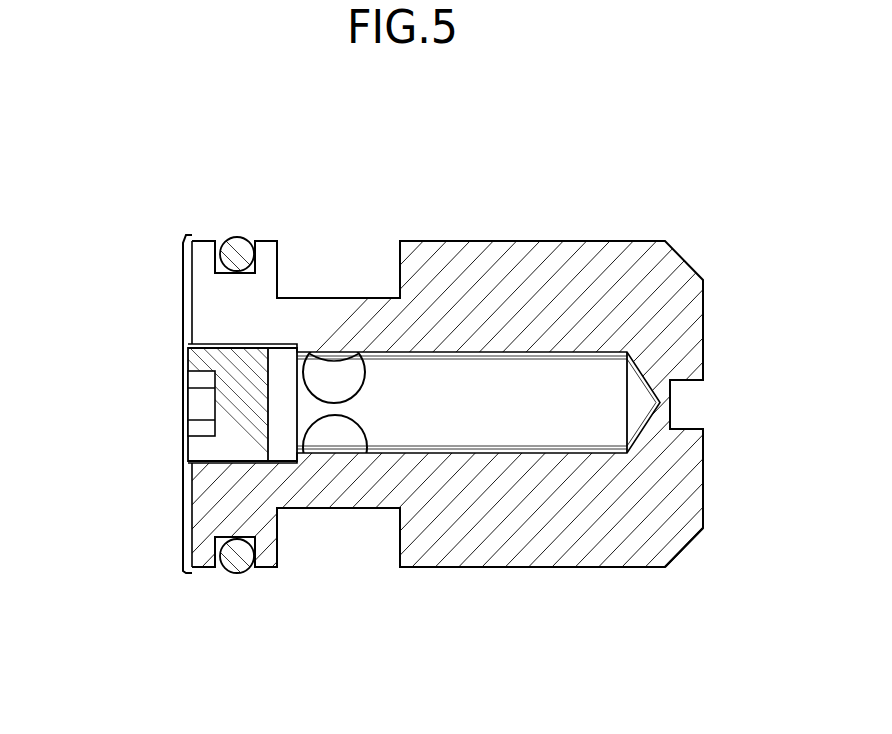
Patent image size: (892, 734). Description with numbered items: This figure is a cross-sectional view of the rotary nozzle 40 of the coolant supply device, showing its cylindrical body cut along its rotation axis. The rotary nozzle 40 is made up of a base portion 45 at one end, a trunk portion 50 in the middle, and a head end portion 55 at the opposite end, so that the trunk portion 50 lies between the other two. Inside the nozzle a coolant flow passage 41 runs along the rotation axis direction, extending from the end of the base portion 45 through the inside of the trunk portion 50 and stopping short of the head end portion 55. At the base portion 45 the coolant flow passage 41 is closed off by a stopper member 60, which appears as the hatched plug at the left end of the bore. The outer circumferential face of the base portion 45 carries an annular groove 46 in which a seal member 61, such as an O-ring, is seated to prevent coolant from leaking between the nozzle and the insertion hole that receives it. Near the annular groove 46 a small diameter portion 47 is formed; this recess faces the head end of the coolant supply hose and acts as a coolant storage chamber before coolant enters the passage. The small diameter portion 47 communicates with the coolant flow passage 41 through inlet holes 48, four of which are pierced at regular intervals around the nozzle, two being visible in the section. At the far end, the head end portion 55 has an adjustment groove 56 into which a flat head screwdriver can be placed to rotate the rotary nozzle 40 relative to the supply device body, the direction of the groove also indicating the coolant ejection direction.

The rotary nozzle 40 is at (150, 237).
The coolant flow passage 41 is at (497, 395).
The base portion 45 is at (183, 582).
The annular groove 46 is at (222, 549).
The small diameter portion 47 is at (352, 270).
The inlet hole 48 is at (323, 447).
The trunk portion 50 is at (472, 585).
The head end portion 55 is at (690, 563).
The adjustment groove 56 is at (690, 403).
The stopper member 60 is at (202, 450).
The seal member 61 is at (242, 237).